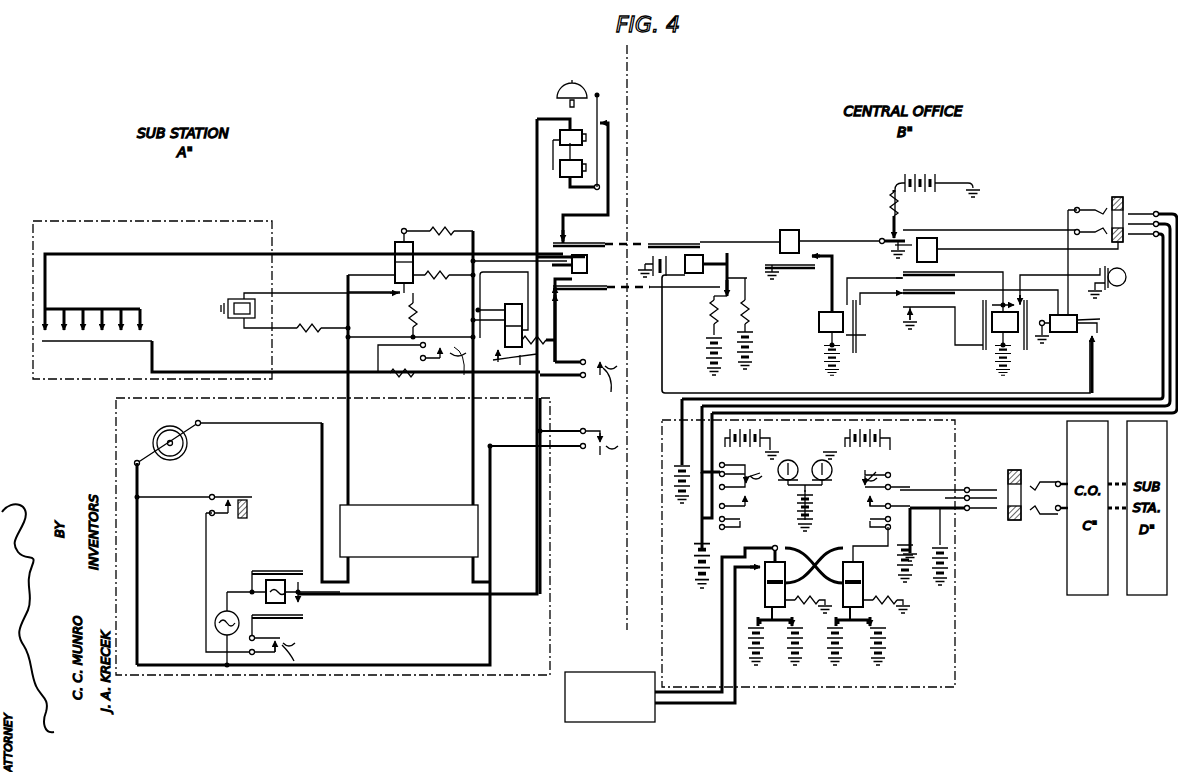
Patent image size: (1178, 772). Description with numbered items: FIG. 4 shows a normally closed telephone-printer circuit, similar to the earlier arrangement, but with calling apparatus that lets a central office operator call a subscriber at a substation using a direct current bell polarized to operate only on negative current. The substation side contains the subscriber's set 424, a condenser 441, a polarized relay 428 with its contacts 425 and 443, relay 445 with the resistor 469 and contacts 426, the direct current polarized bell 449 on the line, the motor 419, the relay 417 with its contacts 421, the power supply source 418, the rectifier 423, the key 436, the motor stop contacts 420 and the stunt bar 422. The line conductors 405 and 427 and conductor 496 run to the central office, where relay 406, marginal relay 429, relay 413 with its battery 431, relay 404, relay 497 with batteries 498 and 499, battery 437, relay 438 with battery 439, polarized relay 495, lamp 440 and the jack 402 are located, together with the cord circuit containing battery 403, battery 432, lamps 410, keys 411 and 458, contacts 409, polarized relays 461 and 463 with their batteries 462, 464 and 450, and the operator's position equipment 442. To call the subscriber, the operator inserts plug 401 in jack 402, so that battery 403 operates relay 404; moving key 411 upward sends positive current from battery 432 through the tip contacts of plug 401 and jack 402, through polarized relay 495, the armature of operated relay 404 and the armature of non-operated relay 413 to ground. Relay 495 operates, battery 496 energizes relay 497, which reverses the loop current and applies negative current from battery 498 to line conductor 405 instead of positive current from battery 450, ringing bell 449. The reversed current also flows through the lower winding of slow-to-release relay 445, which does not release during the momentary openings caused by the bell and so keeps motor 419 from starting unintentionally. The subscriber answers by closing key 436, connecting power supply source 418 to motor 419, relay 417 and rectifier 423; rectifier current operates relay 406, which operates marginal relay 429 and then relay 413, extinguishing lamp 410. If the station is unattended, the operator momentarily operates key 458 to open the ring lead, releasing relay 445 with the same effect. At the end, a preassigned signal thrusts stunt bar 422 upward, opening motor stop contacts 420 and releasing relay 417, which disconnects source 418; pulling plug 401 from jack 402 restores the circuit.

The plug 401 is at (1138, 208).
The jack 402 is at (1112, 197).
The battery 403 is at (672, 470).
The relay 404 is at (928, 238).
The line conductor 405 is at (655, 244).
The relay 406 is at (582, 278).
The contacts 409 is at (862, 509).
The lamp 410 is at (794, 466).
The key 411 is at (752, 500).
The relay 413 is at (819, 322).
The relay 417 is at (277, 580).
The power supply source 418 is at (218, 611).
The motor 419 is at (177, 422).
The motor stop contacts 420 is at (236, 498).
The contacts 421 is at (287, 650).
The stunt bar 422 is at (247, 511).
The rectifier 423 is at (460, 562).
The telephone set 424 is at (130, 310).
The contacts 425 is at (449, 372).
The contacts 426 is at (578, 379).
The line conductor 427 is at (633, 290).
The polarized relay 428 is at (380, 222).
The marginal relay 429 is at (787, 230).
The battery 431 is at (819, 358).
The battery 432 is at (752, 448).
The key 436 is at (553, 451).
The battery 437 is at (934, 172).
The relay 438 is at (992, 346).
The battery 439 is at (1012, 366).
The lamp 440 is at (1125, 285).
The condenser 441 is at (224, 309).
The operator's position equipment 442 is at (565, 703).
The resistor 443 is at (392, 375).
The relay 445 is at (515, 304).
The direct current polarized bell 449 is at (553, 141).
The battery 450 is at (890, 644).
The key 458 is at (752, 514).
The polarized relay 461 is at (765, 570).
The battery 462 is at (774, 662).
The polarized relay 463 is at (863, 574).
The battery 464 is at (850, 662).
The resistor 469 is at (550, 345).
The polarized relay 495 is at (1063, 338).
The battery 496 is at (670, 246).
The relay 497 is at (686, 284).
The battery 498 is at (704, 356).
The battery 499 is at (752, 356).